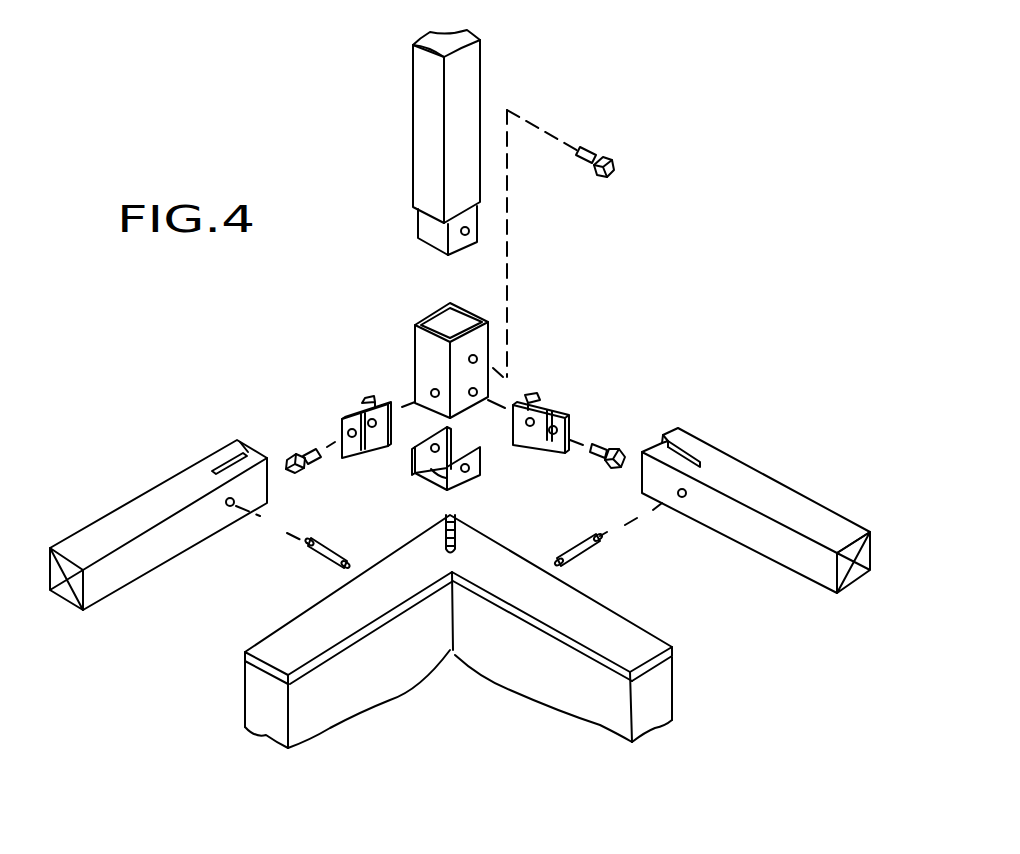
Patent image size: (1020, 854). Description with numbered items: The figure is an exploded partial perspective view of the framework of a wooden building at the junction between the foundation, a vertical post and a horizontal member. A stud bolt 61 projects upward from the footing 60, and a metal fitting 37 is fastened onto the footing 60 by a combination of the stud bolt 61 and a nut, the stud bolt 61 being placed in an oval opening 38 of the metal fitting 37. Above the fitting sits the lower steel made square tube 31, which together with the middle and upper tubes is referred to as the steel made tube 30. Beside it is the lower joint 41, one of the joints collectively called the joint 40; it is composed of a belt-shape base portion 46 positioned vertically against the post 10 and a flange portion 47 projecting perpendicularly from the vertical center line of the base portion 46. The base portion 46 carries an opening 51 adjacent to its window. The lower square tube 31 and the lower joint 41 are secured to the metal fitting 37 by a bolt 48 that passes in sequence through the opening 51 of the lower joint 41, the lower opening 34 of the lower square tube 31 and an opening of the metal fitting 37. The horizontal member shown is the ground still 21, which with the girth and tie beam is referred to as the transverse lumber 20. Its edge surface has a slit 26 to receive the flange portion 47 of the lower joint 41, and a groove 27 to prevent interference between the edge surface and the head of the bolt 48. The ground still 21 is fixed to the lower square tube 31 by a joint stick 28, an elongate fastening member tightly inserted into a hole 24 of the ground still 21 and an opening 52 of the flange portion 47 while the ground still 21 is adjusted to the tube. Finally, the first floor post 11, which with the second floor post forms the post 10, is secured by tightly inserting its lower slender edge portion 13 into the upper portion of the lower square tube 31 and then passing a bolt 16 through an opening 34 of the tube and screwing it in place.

The post 10 is at (423, 109).
The first floor post 11 is at (366, 126).
The lower slender edge portion 13 is at (425, 224).
The bolt 16 is at (607, 158).
The transverse lumber 20 is at (767, 471).
The ground still 21 is at (767, 471).
The hole 24 is at (226, 503).
The slit 26 is at (690, 449).
The groove 27 is at (672, 434).
The joint stick 28 is at (307, 555).
The steel made tube 30 is at (432, 310).
The lower steel made square tube 31 is at (391, 344).
The opening 34 is at (432, 391).
The metal fitting 37 is at (470, 478).
The oval opening 38 is at (425, 480).
The joint 40 is at (326, 414).
The lower joint 41 is at (220, 482).
The belt-shape base portion 46 is at (357, 455).
The flange portion 47 is at (360, 415).
The bolt 48 is at (600, 447).
The opening 51 is at (528, 418).
The opening 52 is at (554, 426).
The footing 60 is at (653, 685).
The stud bolt 61 is at (457, 538).